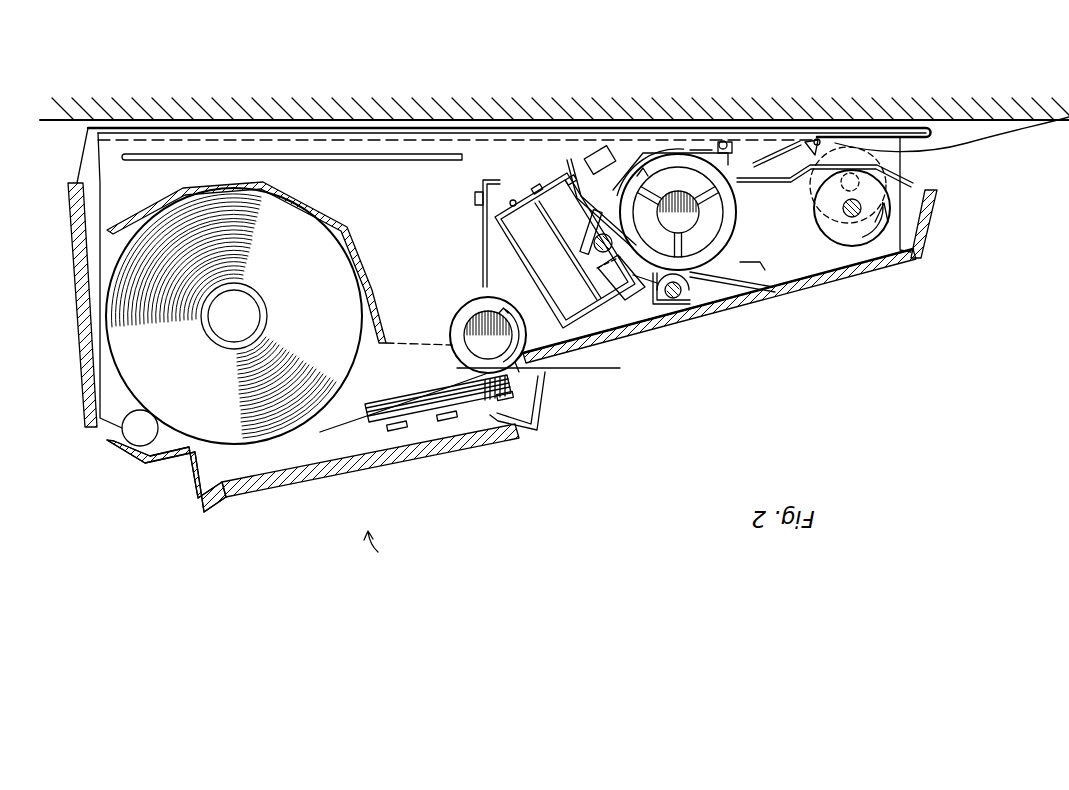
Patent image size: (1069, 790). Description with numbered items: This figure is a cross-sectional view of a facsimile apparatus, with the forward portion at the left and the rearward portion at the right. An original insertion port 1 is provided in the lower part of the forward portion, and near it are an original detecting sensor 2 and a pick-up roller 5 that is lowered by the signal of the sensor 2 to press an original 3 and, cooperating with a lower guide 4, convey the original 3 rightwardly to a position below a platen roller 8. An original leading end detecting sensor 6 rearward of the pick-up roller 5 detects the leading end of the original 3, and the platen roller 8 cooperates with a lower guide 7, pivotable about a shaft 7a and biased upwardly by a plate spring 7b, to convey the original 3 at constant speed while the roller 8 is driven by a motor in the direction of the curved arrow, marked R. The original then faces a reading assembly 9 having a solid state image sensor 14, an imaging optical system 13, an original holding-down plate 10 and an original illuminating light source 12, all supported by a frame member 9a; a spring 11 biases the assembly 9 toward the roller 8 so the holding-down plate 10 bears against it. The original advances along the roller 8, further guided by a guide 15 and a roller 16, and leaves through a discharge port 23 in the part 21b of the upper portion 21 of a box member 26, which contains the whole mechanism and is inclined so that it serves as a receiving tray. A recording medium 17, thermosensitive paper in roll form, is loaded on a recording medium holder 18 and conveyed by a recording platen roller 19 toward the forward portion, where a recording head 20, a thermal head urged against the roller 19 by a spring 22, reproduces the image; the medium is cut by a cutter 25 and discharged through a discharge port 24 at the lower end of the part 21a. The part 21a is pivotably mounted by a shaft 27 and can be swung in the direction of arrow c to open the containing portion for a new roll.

The original insertion port 1 is at (930, 173).
The original detecting sensor 2 is at (812, 152).
The original 3 is at (1020, 140).
The lower guide 4 is at (770, 157).
The pick-up roller 5 is at (815, 213).
The original leading end detecting sensor 6 is at (513, 200).
The lower guide 7 is at (655, 152).
The shaft 7a is at (725, 140).
The plate spring 7b is at (698, 148).
The platen roller 8 is at (733, 215).
The reading assembly 9 is at (610, 150).
The frame member 9a is at (555, 182).
The original holding-down plate 10 is at (567, 160).
The spring 11 is at (500, 262).
The original illuminating light source 12 is at (585, 237).
The imaging optical system 13 is at (570, 265).
The solid state image sensor 14 is at (543, 295).
The guide 15 is at (745, 262).
The roller 16 is at (707, 313).
The recording medium 17 is at (373, 388).
The recording medium holder 18 is at (183, 190).
The recording platen roller 19 is at (463, 300).
The recording head 20 is at (368, 418).
The upper portion 21 is at (690, 385).
The part of the upper portion 21a is at (305, 494).
The part of the upper portion 21b is at (843, 297).
The spring 22 is at (483, 430).
The discharge port 23 is at (765, 305).
The discharge port 24 is at (580, 373).
The cutter 25 is at (537, 377).
The box member 26 is at (73, 247).
The shaft 27 is at (135, 432).
The rotation direction R is at (647, 217).
The arrow C c is at (363, 548).